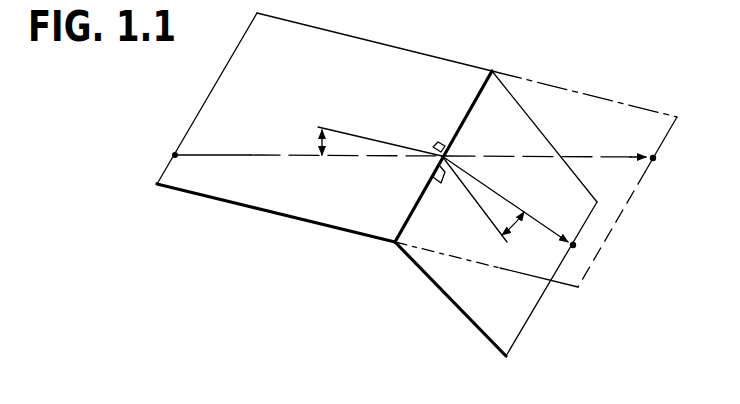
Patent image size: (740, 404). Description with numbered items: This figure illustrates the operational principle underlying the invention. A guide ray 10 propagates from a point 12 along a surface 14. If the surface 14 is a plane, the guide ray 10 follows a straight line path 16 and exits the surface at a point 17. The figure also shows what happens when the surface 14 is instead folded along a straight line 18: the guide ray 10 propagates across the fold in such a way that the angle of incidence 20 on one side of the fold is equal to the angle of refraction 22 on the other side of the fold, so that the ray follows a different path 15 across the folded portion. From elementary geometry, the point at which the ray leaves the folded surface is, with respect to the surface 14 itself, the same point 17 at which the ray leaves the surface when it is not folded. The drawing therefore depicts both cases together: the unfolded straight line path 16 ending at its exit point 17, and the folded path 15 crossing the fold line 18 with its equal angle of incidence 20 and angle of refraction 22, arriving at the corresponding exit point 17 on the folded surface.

The guide ray 10 is at (247, 154).
The point 12 is at (174, 154).
The surface 14 is at (342, 44).
The path 15 is at (547, 226).
The straight line path 16 is at (595, 156).
The point 17 is at (653, 158).
The straight line 18 is at (397, 228).
The angle of incidence 20 is at (320, 142).
The angle of refraction 22 is at (518, 226).